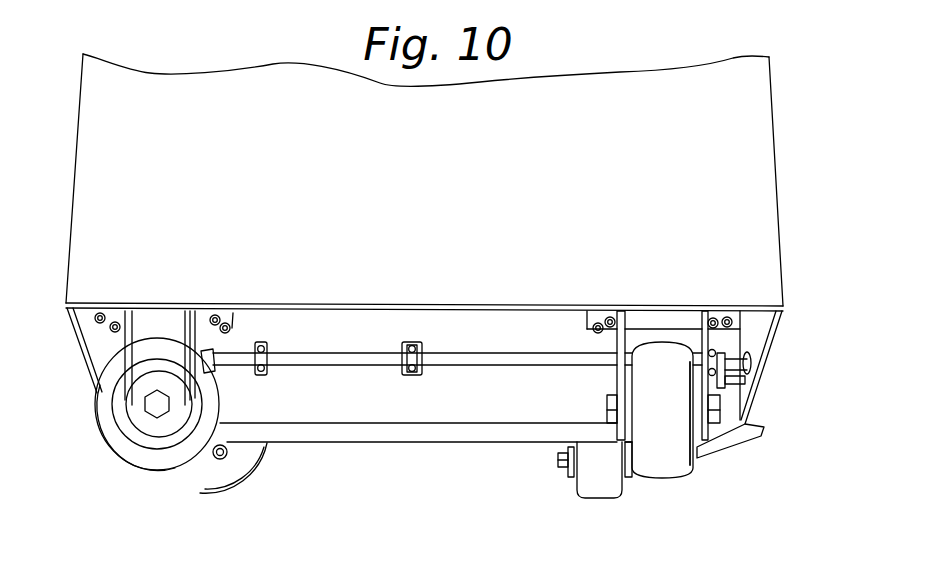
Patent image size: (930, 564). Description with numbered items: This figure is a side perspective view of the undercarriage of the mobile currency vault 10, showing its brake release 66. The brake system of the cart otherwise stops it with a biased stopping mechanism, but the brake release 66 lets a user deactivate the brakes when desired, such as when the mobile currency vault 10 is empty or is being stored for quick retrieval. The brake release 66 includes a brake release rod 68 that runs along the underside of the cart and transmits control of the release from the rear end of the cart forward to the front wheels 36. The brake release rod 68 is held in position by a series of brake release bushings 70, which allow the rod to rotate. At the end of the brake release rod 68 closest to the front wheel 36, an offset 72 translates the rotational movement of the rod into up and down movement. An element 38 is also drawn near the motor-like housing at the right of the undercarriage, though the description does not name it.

The mobile currency vault 10 is at (650, 177).
The offset 72 is at (127, 345).
The front wheels 36 is at (203, 472).
The brake release bushings 70 is at (413, 370).
The brake release rod 68 is at (493, 367).
The motor 38 is at (607, 491).
The brake release 66 is at (780, 375).